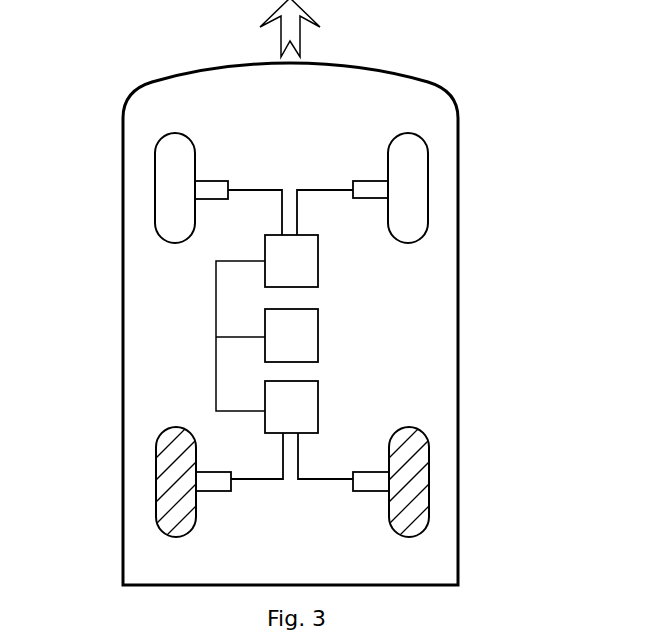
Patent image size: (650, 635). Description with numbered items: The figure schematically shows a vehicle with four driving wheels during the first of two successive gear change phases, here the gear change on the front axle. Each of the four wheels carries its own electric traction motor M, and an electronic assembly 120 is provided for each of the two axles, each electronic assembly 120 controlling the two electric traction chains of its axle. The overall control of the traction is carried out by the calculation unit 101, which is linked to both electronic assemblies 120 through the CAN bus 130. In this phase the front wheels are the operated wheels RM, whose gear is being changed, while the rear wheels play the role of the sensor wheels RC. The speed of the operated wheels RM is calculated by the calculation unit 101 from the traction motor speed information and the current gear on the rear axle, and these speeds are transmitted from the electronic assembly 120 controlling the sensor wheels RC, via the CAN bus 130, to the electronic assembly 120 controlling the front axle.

The operated wheels RM is at (172, 166).
The sensor wheels RC is at (173, 512).
The electric traction motor M is at (207, 187).
The electronic assembly 120 is at (318, 253).
The calculation unit 101 is at (318, 322).
The CAN bus 130 is at (216, 293).